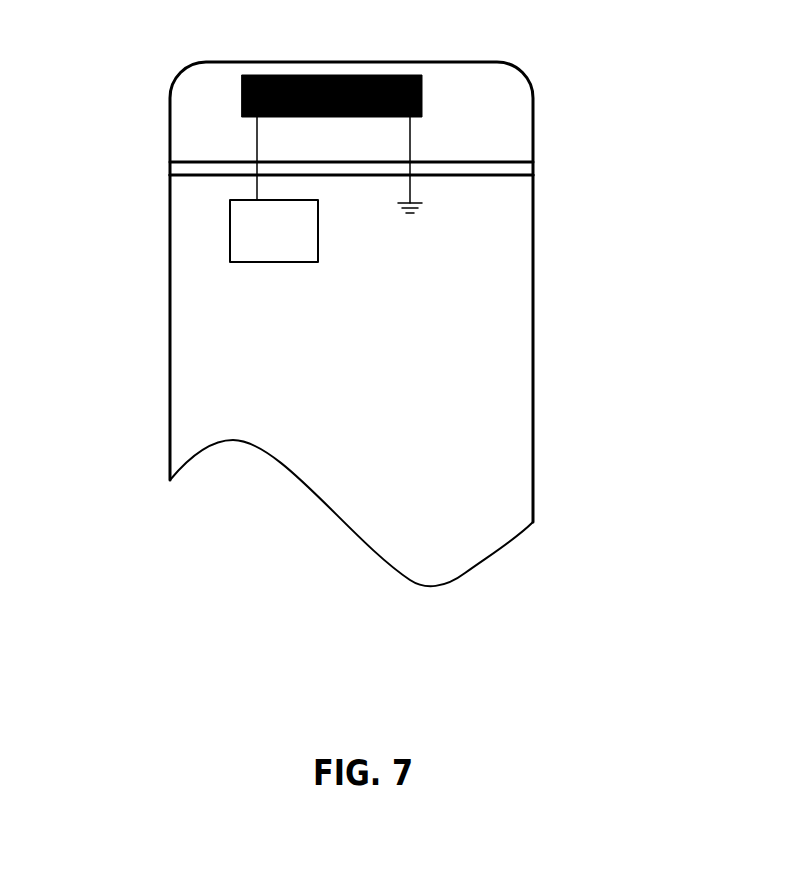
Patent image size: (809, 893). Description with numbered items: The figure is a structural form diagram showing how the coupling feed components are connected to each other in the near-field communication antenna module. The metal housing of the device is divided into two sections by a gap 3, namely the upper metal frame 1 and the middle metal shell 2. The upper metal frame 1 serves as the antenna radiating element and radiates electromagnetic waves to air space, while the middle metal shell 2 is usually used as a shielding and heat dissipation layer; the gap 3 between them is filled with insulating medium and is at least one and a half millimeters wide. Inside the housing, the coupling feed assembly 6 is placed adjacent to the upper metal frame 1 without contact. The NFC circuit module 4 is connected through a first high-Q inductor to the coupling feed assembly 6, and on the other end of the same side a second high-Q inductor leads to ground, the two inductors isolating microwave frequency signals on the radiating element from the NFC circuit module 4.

The upper metal frame 1 is at (497, 117).
The middle metal shell 2 is at (458, 418).
The gap 3 is at (168, 170).
The NFC circuit module 4 is at (250, 238).
The coupling feed assembly 6 is at (240, 74).